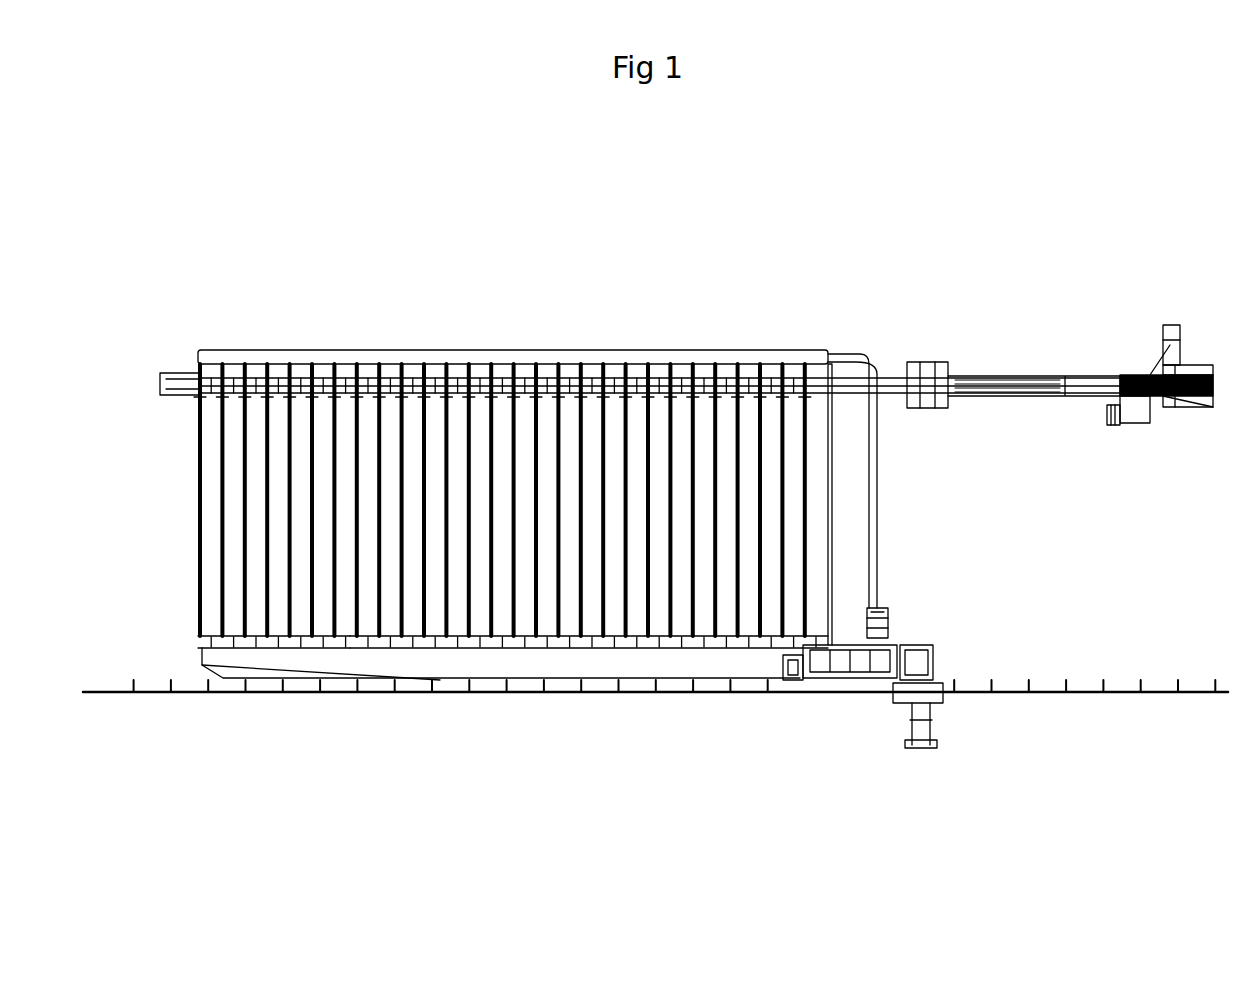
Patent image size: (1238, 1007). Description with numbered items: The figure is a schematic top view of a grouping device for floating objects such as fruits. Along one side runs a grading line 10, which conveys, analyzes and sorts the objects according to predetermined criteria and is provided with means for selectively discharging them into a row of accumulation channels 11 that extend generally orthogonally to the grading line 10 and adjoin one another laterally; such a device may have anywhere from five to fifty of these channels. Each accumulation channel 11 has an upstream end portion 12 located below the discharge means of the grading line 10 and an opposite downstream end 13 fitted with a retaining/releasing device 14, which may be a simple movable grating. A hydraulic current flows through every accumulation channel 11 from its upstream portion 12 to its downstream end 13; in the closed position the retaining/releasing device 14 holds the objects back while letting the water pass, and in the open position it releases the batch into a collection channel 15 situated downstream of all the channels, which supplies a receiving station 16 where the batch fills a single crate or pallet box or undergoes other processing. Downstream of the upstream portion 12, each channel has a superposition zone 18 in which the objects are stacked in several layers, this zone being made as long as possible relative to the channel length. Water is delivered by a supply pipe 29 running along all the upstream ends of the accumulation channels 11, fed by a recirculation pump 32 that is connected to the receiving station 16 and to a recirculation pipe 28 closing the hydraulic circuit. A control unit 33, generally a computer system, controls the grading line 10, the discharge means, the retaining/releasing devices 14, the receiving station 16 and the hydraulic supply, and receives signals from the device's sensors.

The grading line 10 is at (945, 320).
The accumulation channel 11 is at (638, 500).
The upstream end portion 12 is at (594, 402).
The downstream end 13 is at (500, 648).
The retaining/releasing device 14 is at (322, 648).
The collection channel 15 is at (553, 668).
The receiving station 16 is at (843, 714).
The superposition zone 18 is at (160, 554).
The recirculation pipe 28 is at (878, 549).
The supply pipe 29 is at (712, 356).
The recirculation pump 32 is at (886, 623).
The control unit 33 is at (1119, 425).